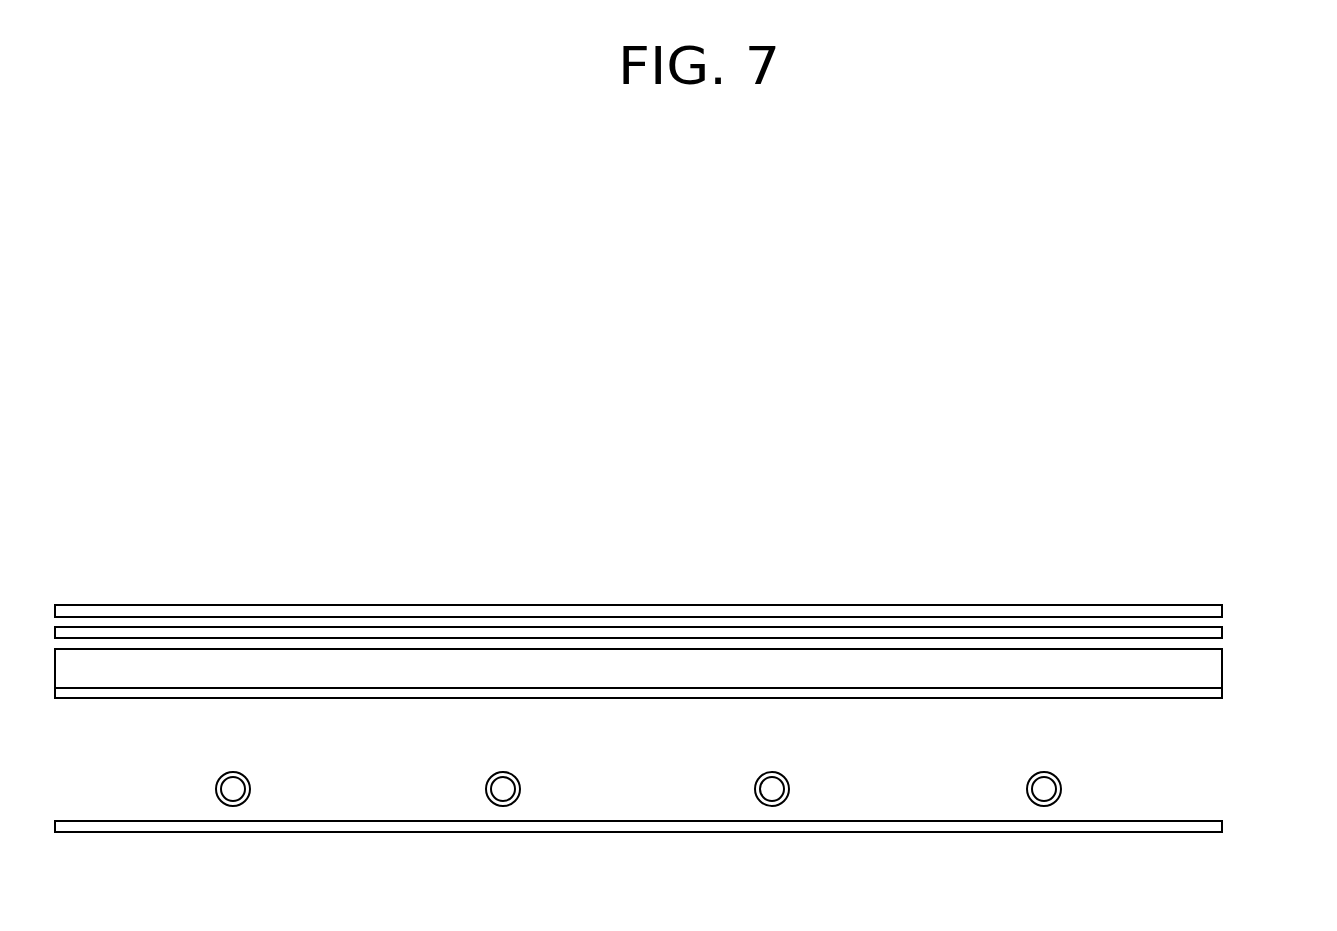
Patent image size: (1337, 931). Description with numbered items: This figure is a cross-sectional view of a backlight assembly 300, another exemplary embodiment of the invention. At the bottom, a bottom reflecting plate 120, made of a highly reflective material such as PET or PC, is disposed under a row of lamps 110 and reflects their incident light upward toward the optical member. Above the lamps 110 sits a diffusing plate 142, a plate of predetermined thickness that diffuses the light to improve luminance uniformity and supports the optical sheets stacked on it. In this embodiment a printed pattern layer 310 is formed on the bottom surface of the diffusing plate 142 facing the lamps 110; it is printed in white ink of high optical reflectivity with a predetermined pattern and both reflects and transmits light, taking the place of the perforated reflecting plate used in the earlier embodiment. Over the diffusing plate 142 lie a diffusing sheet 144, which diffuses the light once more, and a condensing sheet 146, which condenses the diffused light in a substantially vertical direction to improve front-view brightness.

The backlight assembly 300 is at (677, 545).
The condensing sheet 146 is at (1222, 612).
The diffusing sheet 144 is at (1218, 632).
The diffusing plate 142 is at (1218, 666).
The printed pattern layer 310 is at (1222, 691).
The lamps 110 is at (1061, 788).
The bottom reflecting plate 120 is at (1222, 825).